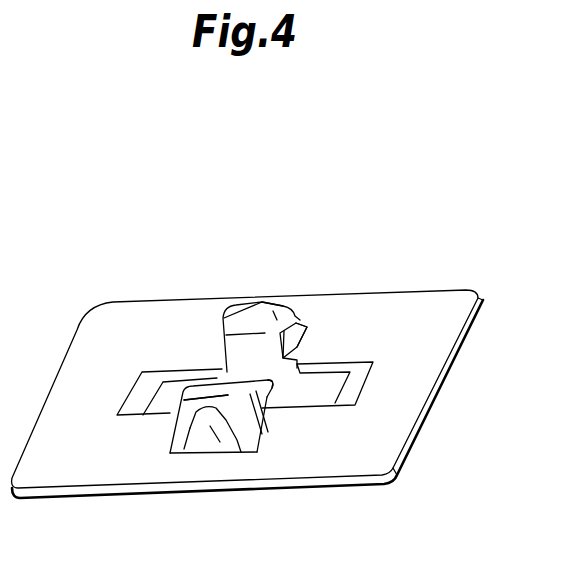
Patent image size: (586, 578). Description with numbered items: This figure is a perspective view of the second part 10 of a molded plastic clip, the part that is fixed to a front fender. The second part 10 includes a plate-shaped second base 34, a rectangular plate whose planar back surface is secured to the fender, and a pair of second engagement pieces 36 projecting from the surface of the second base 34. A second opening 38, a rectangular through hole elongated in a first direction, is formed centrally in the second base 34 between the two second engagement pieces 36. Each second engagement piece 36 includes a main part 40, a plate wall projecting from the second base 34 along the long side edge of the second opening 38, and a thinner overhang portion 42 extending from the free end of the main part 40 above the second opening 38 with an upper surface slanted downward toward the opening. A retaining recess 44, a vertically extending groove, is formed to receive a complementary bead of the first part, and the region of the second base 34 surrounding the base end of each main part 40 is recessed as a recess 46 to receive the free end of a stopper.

The second part 10 is at (446, 219).
The second base 34 is at (133, 317).
The second engagement pieces 36 is at (272, 432).
The second opening 38 is at (171, 385).
The main part 40 is at (308, 326).
The overhang portion 42 is at (243, 345).
The retaining recess 44 is at (217, 453).
The recess 46 is at (318, 336).